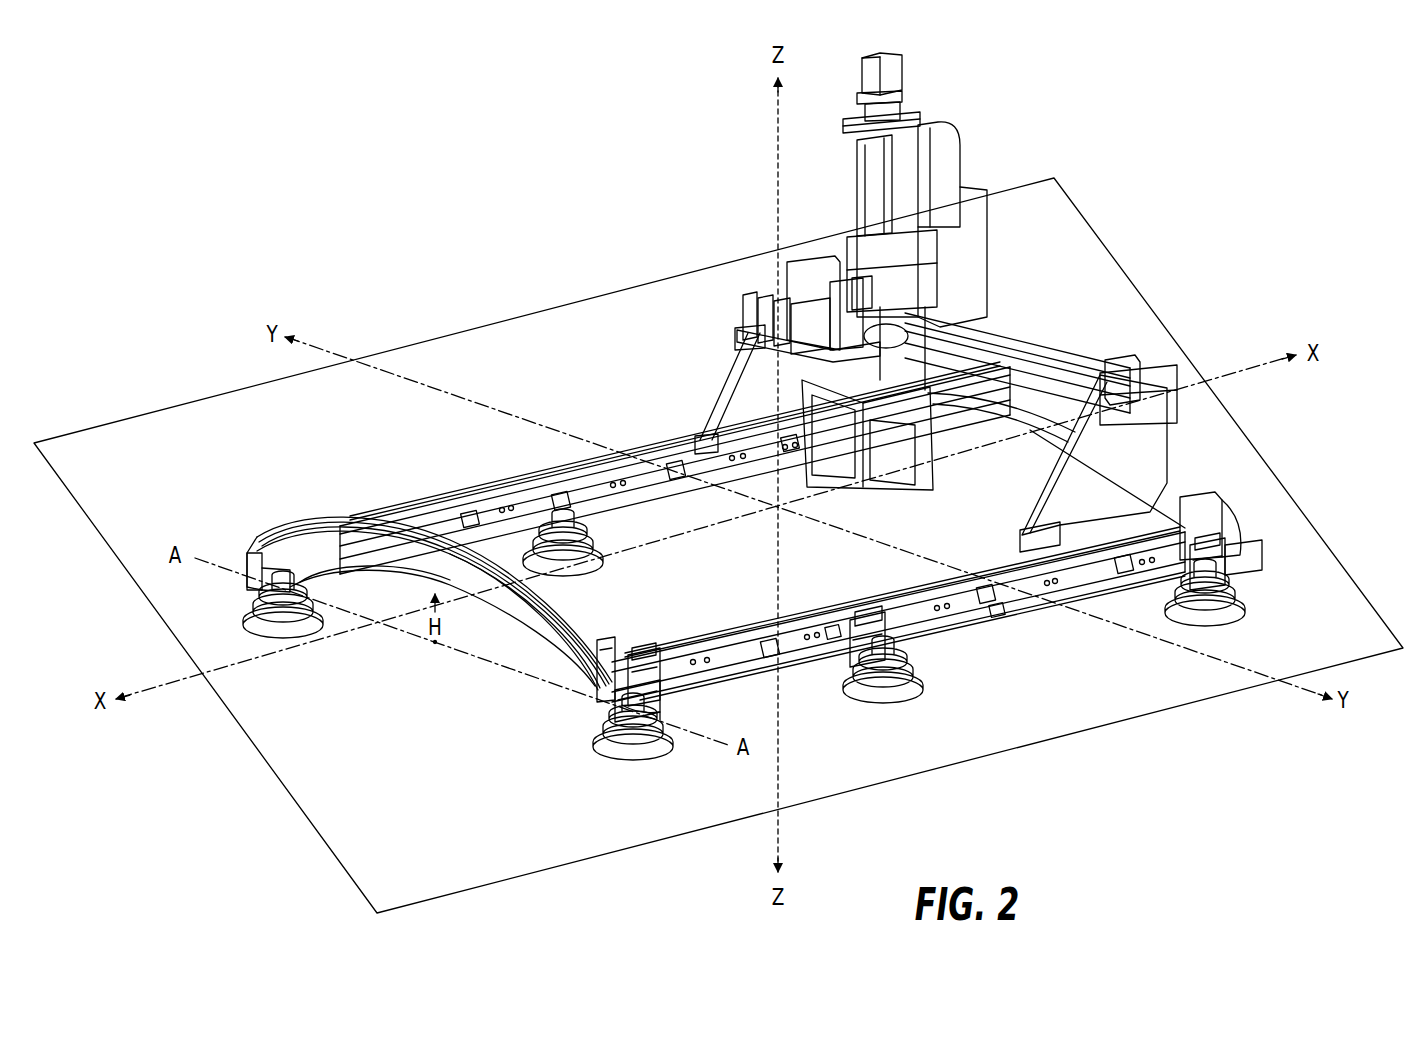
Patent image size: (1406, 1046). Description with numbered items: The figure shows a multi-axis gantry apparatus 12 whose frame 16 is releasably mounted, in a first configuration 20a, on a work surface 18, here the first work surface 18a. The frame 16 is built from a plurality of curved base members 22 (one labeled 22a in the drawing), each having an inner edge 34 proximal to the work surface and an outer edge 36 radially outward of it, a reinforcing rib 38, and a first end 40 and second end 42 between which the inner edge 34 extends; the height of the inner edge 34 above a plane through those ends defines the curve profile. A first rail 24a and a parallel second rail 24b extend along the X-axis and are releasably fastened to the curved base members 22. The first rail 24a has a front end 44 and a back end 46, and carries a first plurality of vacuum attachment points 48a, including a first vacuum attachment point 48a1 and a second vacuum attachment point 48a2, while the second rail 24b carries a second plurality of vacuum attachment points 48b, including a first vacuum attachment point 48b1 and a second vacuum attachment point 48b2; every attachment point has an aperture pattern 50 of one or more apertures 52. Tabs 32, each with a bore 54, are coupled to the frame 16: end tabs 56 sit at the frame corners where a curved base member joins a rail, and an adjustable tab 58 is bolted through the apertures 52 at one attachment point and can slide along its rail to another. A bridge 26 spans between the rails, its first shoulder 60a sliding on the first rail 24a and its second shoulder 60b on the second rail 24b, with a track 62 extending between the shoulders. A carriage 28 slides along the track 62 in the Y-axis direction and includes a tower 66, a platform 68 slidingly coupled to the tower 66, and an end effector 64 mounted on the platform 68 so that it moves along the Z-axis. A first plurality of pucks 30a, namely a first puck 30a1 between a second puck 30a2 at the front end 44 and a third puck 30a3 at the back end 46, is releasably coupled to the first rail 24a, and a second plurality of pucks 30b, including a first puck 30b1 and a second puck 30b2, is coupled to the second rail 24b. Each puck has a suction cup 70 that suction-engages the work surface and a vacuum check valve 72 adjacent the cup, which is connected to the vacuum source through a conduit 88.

The multi-axis gantry apparatus 12 is at (194, 207).
The first configuration 20a is at (180, 242).
The frame 16 is at (216, 479).
The work surface 18 is at (515, 352).
The first work surface 18a is at (410, 820).
The curved base members 22 is at (293, 515).
The curved support beam 22a is at (637, 576).
The reinforcing rib 38 is at (343, 528).
The inner edge 34 is at (397, 575).
The outer edge 36 is at (560, 614).
The second end 42 is at (283, 585).
The front end 44 is at (597, 647).
The first end 40 is at (613, 705).
The second rail 24b is at (583, 455).
The first rail 24a is at (690, 622).
The conduit 88 is at (747, 477).
The second plurality of vacuum attachment points 48b is at (478, 516).
The first vacuum attachment point 48b1 is at (531, 467).
The second vacuum attachment point 48b2 is at (677, 470).
The aperture pattern 50 is at (563, 493).
The apertures 52 is at (515, 522).
The first plurality of vacuum attachment points 48a is at (1133, 607).
The first vacuum attachment point 48a1 is at (833, 627).
The second vacuum attachment point 48a2 is at (997, 610).
The tabs 32 is at (647, 653).
The end tabs 56 is at (1010, 576).
The adjustable tab 58 is at (871, 584).
The back end 46 is at (1230, 512).
The bore 54 is at (1282, 557).
The suction cup 70 is at (598, 567).
The second plurality of pucks 30b is at (230, 633).
The second puck 30b2 is at (210, 625).
The first puck 30b1 is at (603, 528).
The first plurality of pucks 30a is at (608, 770).
The second puck 30a2 is at (591, 765).
The first puck 30a1 is at (865, 712).
The third puck 30a3 is at (1182, 633).
The vacuum check valve 72 is at (660, 722).
The carriage 28 is at (993, 281).
The tower 66 is at (912, 167).
The platform 68 is at (827, 273).
The end effector 64 is at (903, 493).
The track 62 is at (1037, 353).
The bridge 26 is at (1133, 356).
The second shoulder 60b is at (753, 368).
The first shoulder 60a is at (1140, 463).